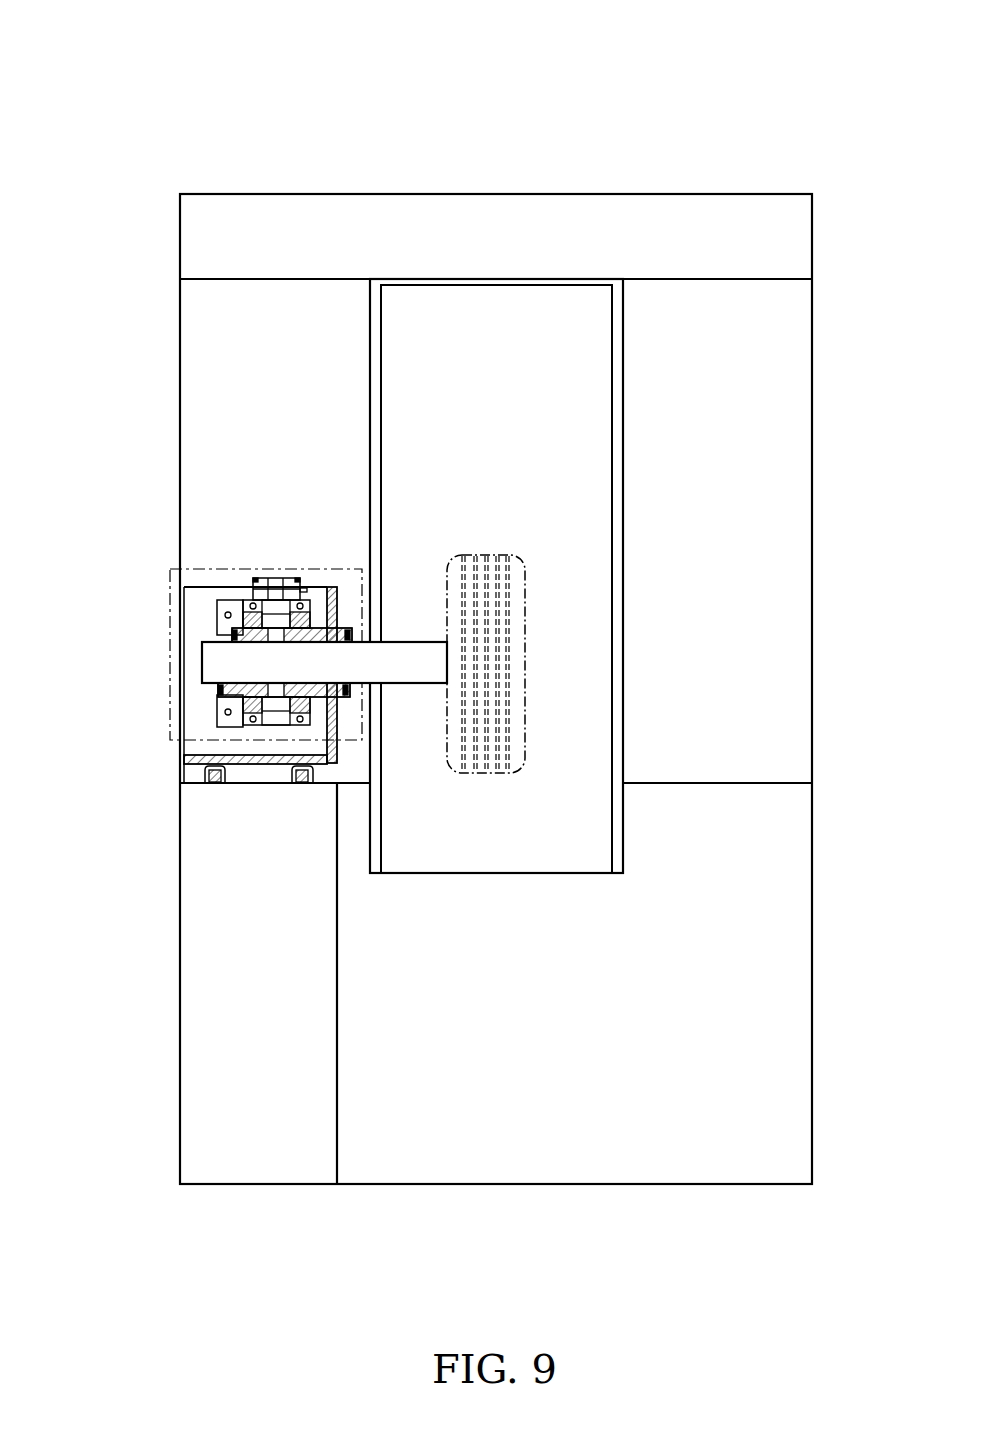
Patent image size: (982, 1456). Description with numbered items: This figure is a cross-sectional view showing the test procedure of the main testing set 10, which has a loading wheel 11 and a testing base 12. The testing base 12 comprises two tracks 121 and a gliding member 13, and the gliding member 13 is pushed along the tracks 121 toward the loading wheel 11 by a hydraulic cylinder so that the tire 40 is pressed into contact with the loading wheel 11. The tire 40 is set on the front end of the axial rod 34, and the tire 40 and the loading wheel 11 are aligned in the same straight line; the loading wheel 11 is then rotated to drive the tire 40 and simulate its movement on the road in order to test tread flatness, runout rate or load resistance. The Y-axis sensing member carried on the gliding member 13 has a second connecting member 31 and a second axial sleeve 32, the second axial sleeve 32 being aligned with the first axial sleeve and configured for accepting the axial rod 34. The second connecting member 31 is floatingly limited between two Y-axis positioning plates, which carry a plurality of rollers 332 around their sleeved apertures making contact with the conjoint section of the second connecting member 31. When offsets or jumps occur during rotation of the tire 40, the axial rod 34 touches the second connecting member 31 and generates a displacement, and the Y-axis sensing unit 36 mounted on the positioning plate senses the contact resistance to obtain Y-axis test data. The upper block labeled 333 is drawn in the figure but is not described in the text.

The main testing set 10 is at (283, 150).
The loading wheel 11 is at (584, 490).
The testing base 12 is at (305, 983).
The tracks 121 is at (197, 777).
The gliding member 13 is at (183, 758).
The second connecting member 31 is at (228, 623).
The second axial sleeve 32 is at (331, 592).
The rollers 332 is at (242, 608).
The motor block 333 is at (268, 583).
The axial rod 34 is at (213, 658).
The Y-axis sensing unit 36 is at (255, 587).
The tire 40 is at (490, 640).